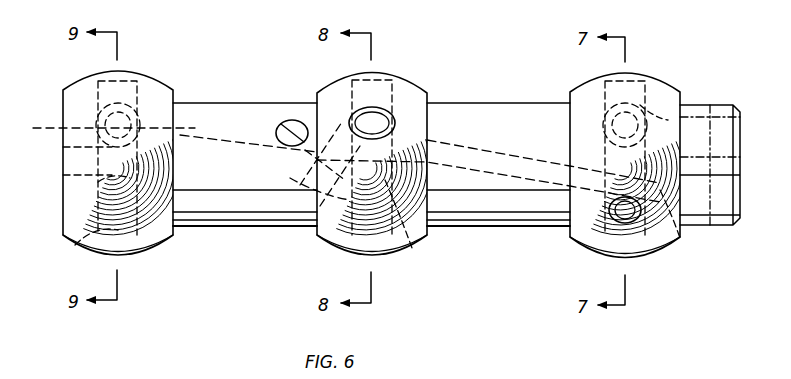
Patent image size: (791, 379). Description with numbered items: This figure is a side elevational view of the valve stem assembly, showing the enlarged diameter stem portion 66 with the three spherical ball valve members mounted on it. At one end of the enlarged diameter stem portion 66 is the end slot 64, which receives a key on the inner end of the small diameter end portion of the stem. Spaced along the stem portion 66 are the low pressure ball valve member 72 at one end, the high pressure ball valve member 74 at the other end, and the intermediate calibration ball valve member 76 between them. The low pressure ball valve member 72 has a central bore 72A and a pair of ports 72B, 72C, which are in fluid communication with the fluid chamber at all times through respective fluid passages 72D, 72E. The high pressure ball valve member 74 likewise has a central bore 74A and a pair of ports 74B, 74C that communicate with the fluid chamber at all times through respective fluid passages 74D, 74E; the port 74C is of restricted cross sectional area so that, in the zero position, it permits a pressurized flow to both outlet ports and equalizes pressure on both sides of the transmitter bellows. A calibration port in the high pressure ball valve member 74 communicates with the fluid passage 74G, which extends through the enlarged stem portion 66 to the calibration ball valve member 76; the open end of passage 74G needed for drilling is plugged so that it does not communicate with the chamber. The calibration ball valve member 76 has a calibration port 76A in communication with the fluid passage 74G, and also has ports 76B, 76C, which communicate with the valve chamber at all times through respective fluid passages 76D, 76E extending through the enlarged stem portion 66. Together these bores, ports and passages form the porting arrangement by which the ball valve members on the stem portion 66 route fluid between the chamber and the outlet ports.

The end slot 64 is at (726, 202).
The enlarged diameter stem portion 66 is at (226, 107).
The low pressure ball valve member 72 is at (152, 98).
The central bore 72A is at (104, 70).
The port 72B is at (132, 125).
The port 72C is at (80, 248).
The fluid passage 72D is at (66, 147).
The fluid passage 72E is at (75, 172).
The high pressure ball valve member 74 is at (660, 98).
The central bore 74A is at (637, 77).
The port 74B is at (605, 112).
The port 74C is at (633, 226).
The fluid passage 74D is at (682, 98).
The fluid passage 74E is at (680, 243).
The fluid passage 74G is at (528, 152).
The calibration ball valve member 76 is at (405, 98).
The calibration port 76A is at (395, 121).
The port 76B is at (355, 72).
The port 76C is at (420, 245).
The fluid passage 76D is at (300, 228).
The fluid passage 76E is at (292, 148).